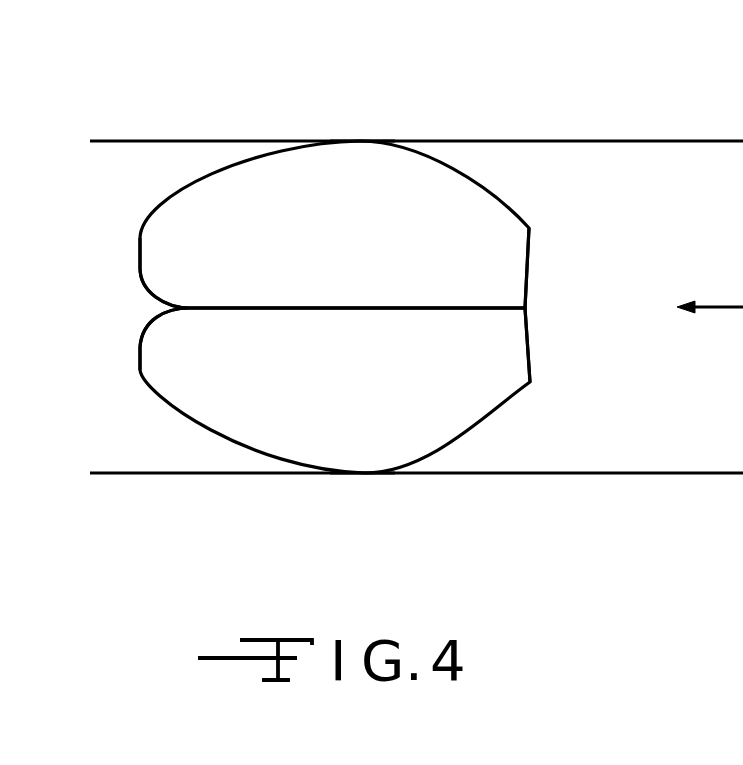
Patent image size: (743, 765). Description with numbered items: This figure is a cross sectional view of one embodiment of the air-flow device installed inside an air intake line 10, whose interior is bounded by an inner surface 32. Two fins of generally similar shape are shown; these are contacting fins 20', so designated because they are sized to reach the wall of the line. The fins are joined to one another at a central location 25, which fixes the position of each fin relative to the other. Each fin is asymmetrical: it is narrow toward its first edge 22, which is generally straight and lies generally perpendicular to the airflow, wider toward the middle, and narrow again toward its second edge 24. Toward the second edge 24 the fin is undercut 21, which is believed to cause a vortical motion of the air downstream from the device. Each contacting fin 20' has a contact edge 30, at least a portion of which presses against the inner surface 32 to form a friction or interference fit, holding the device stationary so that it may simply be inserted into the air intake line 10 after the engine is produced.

The air intake line 10 is at (638, 141).
The contacting fin 20' is at (335, 307).
The undercut 21 is at (147, 330).
The first edge 22 is at (532, 247).
The second edge 24 is at (142, 242).
The central location 25 is at (363, 307).
The contact edge 30 is at (442, 158).
The inner surface 32 is at (568, 473).